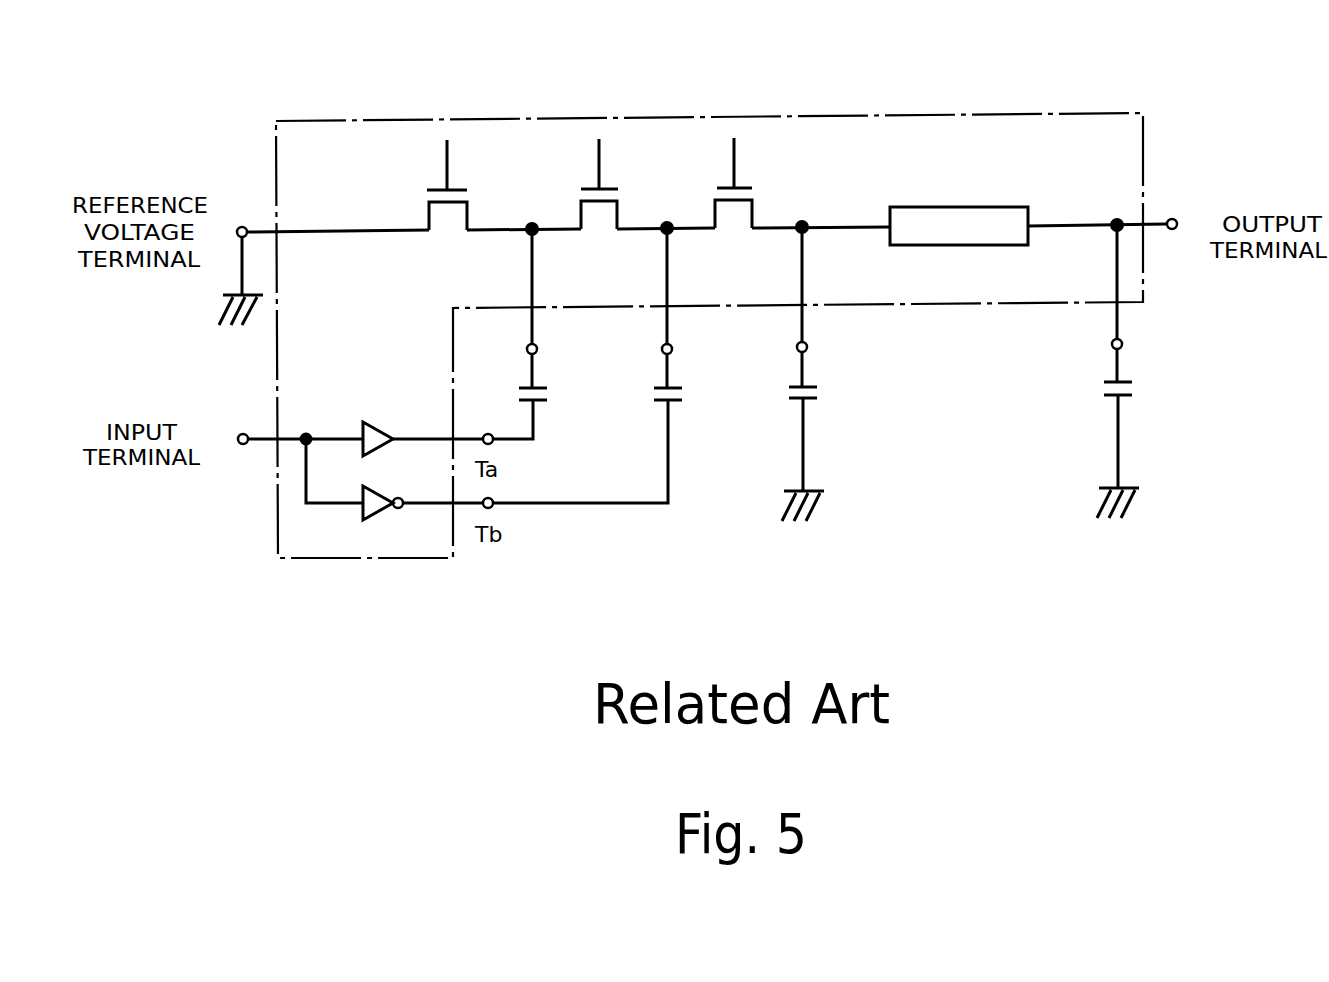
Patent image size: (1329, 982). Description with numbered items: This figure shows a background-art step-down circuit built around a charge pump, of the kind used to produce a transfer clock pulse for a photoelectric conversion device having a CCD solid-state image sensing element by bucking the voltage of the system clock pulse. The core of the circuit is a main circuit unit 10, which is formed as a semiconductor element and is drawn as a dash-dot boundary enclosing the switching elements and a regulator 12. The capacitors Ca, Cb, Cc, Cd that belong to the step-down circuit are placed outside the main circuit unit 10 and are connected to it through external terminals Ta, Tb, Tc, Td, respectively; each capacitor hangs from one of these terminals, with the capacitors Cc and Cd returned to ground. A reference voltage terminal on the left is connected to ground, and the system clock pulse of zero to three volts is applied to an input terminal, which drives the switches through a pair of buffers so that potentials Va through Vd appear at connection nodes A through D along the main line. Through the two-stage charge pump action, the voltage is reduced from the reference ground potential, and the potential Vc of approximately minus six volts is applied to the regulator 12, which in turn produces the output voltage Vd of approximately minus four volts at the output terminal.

The main circuit unit 10 is at (835, 116).
The regulator 12 is at (976, 210).
The external terminal Ta is at (501, 251).
The external terminal Tb is at (647, 250).
The external terminal Tc is at (778, 249).
The external terminal Td is at (1148, 344).
The capacitor Ca is at (554, 322).
The capacitor Cb is at (689, 321).
The capacitor Cc is at (821, 376).
The capacitor Cd is at (1135, 374).